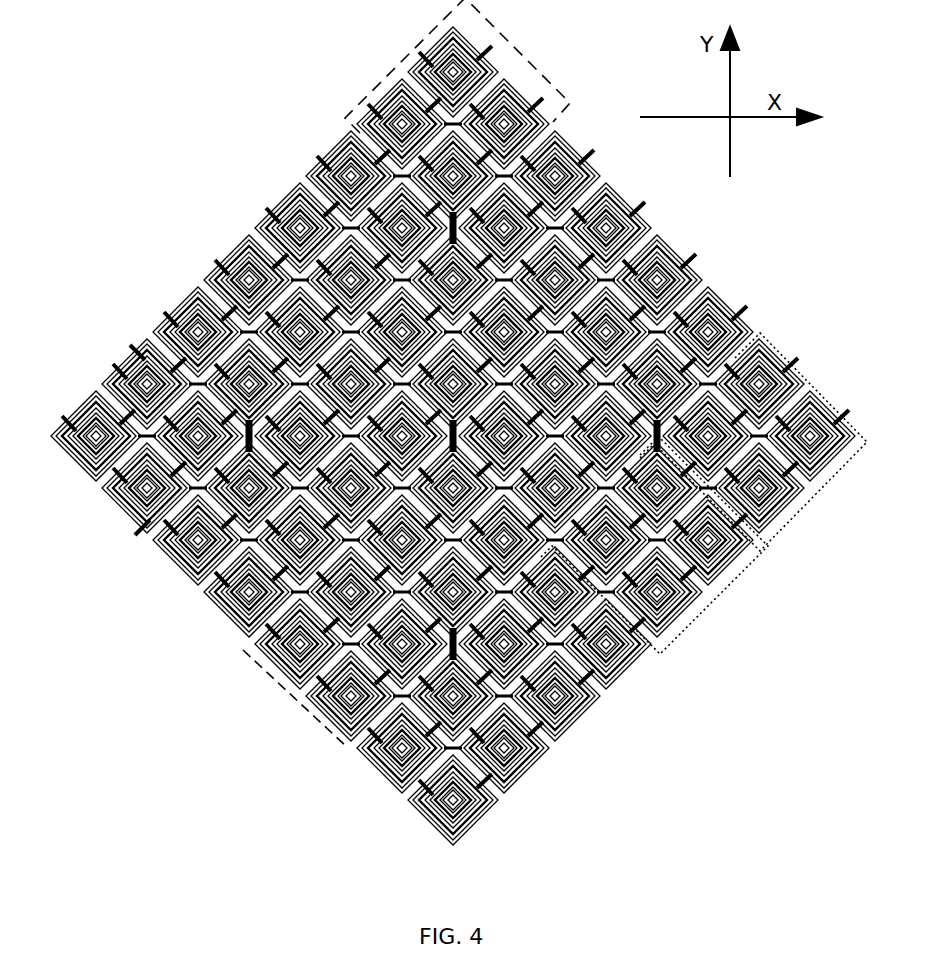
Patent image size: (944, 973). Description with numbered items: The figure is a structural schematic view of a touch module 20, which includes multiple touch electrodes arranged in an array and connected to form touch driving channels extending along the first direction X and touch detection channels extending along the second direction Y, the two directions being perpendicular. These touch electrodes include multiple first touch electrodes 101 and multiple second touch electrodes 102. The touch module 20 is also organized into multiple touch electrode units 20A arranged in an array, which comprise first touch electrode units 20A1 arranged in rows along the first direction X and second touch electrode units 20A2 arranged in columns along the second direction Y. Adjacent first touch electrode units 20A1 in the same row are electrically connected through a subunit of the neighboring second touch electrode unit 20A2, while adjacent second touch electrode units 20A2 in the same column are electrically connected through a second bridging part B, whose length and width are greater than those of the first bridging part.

The touch module 20 is at (100, 106).
The touch electrode unit 20A is at (345, 118).
The first touch electrode unit 20A1 is at (790, 527).
The second touch electrode unit 20A2 is at (710, 600).
The first touch electrode 101 is at (182, 310).
The second touch electrode 102 is at (142, 352).
The second bridging part B is at (150, 537).